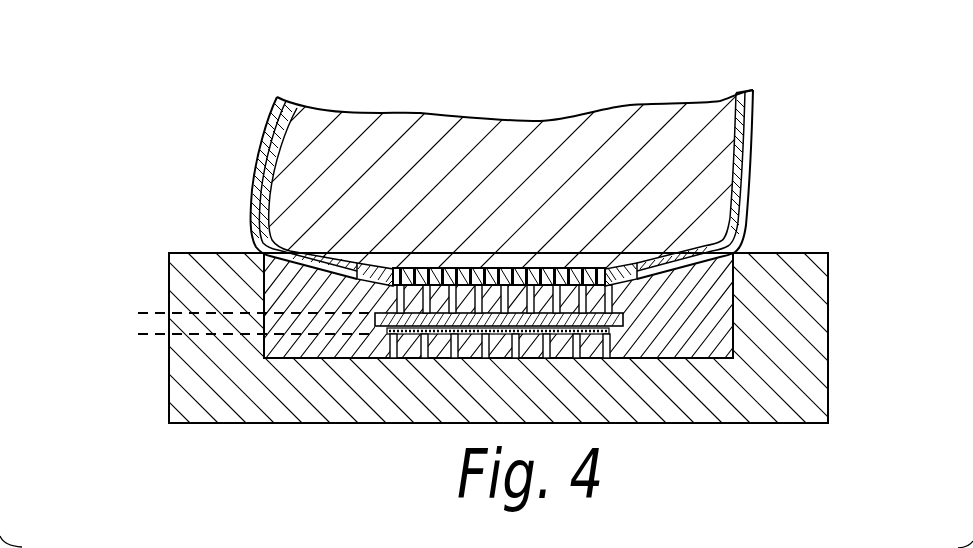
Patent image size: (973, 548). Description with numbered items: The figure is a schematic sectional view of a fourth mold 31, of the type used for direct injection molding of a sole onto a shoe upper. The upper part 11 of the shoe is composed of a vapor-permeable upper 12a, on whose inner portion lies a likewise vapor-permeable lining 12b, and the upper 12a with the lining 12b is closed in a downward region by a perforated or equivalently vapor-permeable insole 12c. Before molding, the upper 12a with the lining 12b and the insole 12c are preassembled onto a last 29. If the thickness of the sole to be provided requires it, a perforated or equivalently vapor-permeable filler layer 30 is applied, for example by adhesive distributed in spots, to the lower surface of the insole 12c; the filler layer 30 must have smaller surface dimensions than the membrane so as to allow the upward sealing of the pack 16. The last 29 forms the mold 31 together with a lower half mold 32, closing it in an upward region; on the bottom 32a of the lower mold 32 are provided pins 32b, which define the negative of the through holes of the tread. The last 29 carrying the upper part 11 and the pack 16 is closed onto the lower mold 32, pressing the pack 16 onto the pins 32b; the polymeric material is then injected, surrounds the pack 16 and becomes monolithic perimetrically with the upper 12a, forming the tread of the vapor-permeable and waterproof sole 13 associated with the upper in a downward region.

The upper part 11 is at (446, 156).
The vapor-permeable upper 12a is at (755, 128).
The lining 12b is at (278, 140).
The insole 12c is at (534, 276).
The sole 13 is at (240, 282).
The pack 16 is at (131, 312).
The last 29 is at (655, 140).
The filler layer 30 is at (605, 302).
The fourth mold 31 is at (853, 357).
The lower mold 32 is at (760, 407).
The bottom of the lower mold 32a is at (653, 360).
The pins 32b is at (457, 350).